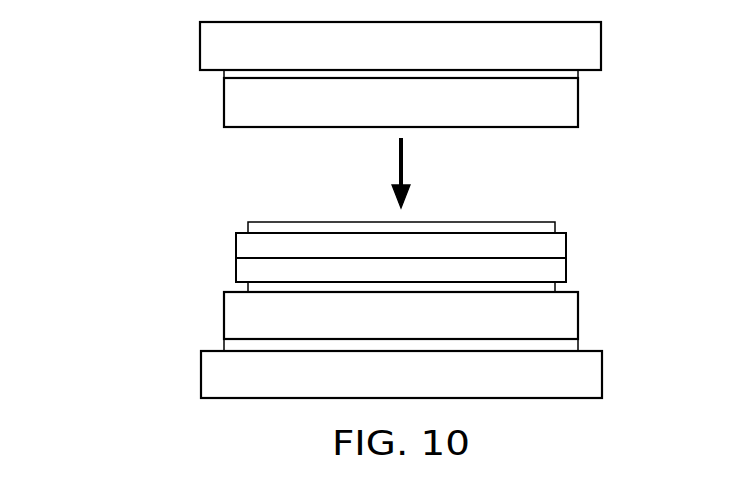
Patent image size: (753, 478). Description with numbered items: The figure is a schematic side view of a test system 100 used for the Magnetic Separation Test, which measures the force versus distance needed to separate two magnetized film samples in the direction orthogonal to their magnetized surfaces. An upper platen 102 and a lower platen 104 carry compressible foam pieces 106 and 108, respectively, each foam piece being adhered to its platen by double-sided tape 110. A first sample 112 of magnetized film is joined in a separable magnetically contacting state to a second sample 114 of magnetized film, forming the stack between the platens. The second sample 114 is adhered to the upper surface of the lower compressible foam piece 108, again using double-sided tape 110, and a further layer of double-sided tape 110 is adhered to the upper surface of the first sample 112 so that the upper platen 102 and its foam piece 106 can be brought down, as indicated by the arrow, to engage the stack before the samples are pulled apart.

The test system 100 is at (121, 40).
The upper platen 102 is at (592, 44).
The lower platen 104 is at (592, 377).
The compressible foam piece 106 is at (568, 100).
The compressible foam piece 108 is at (567, 318).
The double-sided tape 110 is at (233, 74).
The first sample 112 is at (246, 245).
The second sample 114 is at (557, 269).